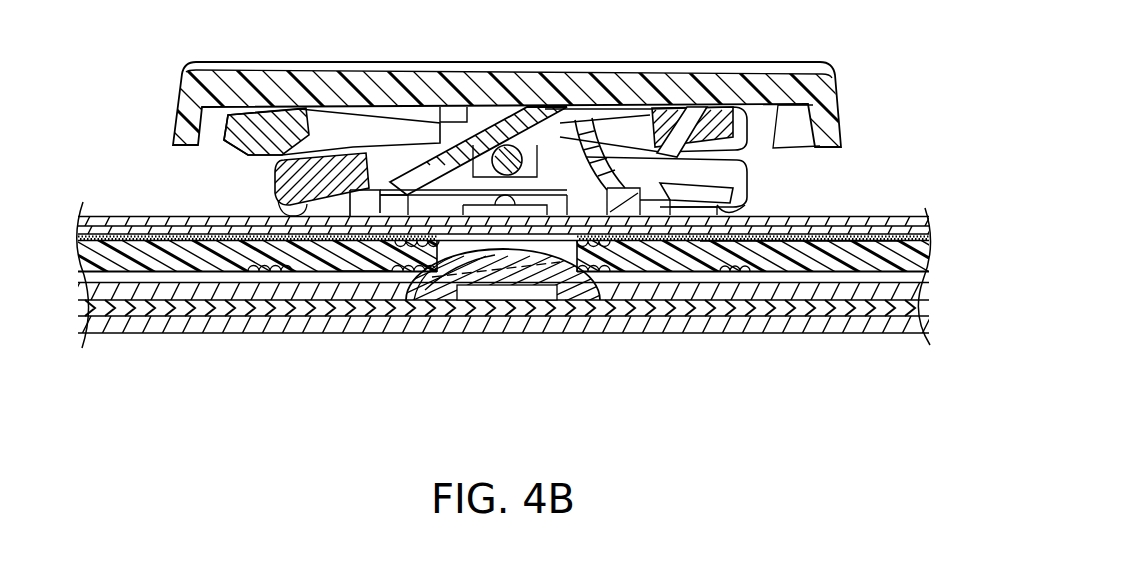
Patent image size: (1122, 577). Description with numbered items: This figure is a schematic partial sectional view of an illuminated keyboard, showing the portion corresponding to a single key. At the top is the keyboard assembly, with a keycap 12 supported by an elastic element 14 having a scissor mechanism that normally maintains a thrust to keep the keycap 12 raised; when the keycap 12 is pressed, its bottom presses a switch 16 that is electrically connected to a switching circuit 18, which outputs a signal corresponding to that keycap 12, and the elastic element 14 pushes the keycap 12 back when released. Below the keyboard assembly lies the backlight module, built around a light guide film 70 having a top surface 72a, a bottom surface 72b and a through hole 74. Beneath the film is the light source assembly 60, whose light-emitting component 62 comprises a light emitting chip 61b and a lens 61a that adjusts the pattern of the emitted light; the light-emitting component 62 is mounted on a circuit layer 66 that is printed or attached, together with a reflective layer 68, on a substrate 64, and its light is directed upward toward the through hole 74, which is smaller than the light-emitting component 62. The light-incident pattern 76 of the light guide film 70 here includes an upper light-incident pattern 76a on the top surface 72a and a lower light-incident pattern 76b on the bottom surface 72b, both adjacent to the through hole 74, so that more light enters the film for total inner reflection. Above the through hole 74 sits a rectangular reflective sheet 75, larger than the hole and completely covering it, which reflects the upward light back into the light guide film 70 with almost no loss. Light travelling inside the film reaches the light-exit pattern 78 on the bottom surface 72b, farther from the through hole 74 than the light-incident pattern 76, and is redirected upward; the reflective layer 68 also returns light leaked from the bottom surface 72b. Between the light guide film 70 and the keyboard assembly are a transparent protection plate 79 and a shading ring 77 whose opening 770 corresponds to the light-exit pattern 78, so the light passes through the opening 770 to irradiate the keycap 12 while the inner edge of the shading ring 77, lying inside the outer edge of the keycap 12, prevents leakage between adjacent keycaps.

The keycap 12 is at (598, 70).
The elastic element 14 is at (663, 110).
The switch 16 is at (477, 212).
The switching circuit 18 is at (869, 222).
The light source assembly 60 is at (519, 337).
The lens 61a is at (587, 258).
The light emitting chip 61b is at (520, 262).
The light-emitting component 62 is at (503, 337).
The substrate 64 is at (612, 292).
The circuit layer 66 is at (661, 307).
The reflective layer 68 is at (693, 323).
The light guide film 70 is at (514, 296).
The top surface 72a is at (222, 238).
The bottom surface 72b is at (216, 273).
The through hole 74 is at (460, 318).
The reflective sheet 75 is at (488, 242).
The light-incident pattern 76 is at (470, 334).
The upper light-incident pattern 76a is at (348, 273).
The lower light-incident pattern 76b is at (417, 273).
The shading ring 77 is at (832, 235).
The light-exit pattern 78 is at (262, 268).
The protection plate 79 is at (900, 236).
The opening 770 is at (803, 237).